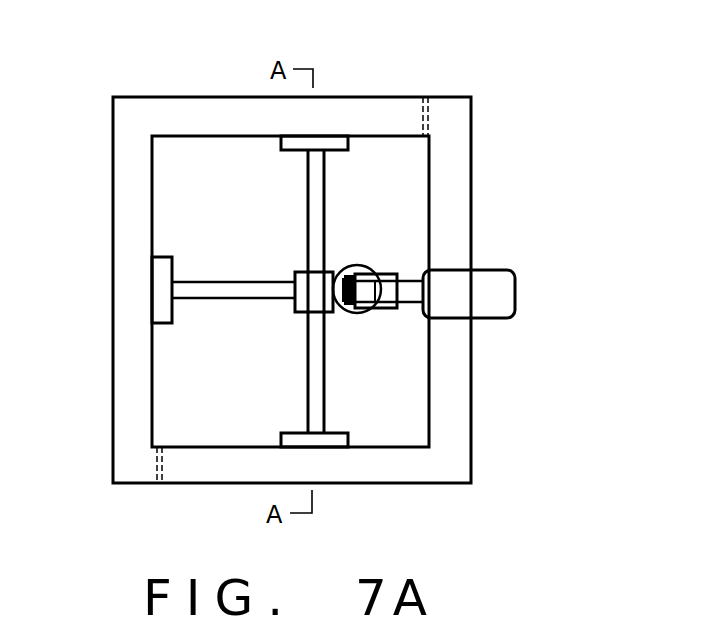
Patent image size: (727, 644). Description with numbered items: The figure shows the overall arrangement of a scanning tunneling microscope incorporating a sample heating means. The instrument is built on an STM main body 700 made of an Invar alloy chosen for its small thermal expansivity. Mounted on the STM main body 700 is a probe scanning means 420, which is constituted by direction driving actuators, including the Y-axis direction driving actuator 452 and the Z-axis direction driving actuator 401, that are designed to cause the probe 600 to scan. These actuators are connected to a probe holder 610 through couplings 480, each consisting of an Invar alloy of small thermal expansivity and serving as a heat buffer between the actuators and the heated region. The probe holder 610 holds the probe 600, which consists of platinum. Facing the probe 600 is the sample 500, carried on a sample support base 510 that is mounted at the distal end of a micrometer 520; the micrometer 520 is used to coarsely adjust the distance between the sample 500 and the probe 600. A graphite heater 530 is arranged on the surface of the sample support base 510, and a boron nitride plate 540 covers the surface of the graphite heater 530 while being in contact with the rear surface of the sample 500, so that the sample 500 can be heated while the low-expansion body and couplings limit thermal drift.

The Z-axis direction driving actuator 401 is at (174, 257).
The probe scanning means 420 is at (212, 189).
The Y-axis direction driving actuator 452 is at (285, 150).
The coupling 480 is at (307, 207).
The sample 500 is at (358, 270).
The sample support base 510 is at (365, 313).
The micrometer 520 is at (506, 270).
The graphite heater 530 is at (363, 313).
The boron nitride plate 540 is at (351, 311).
The probe 600 is at (340, 274).
The probe holder 610 is at (294, 311).
The STM main body 700 is at (452, 484).